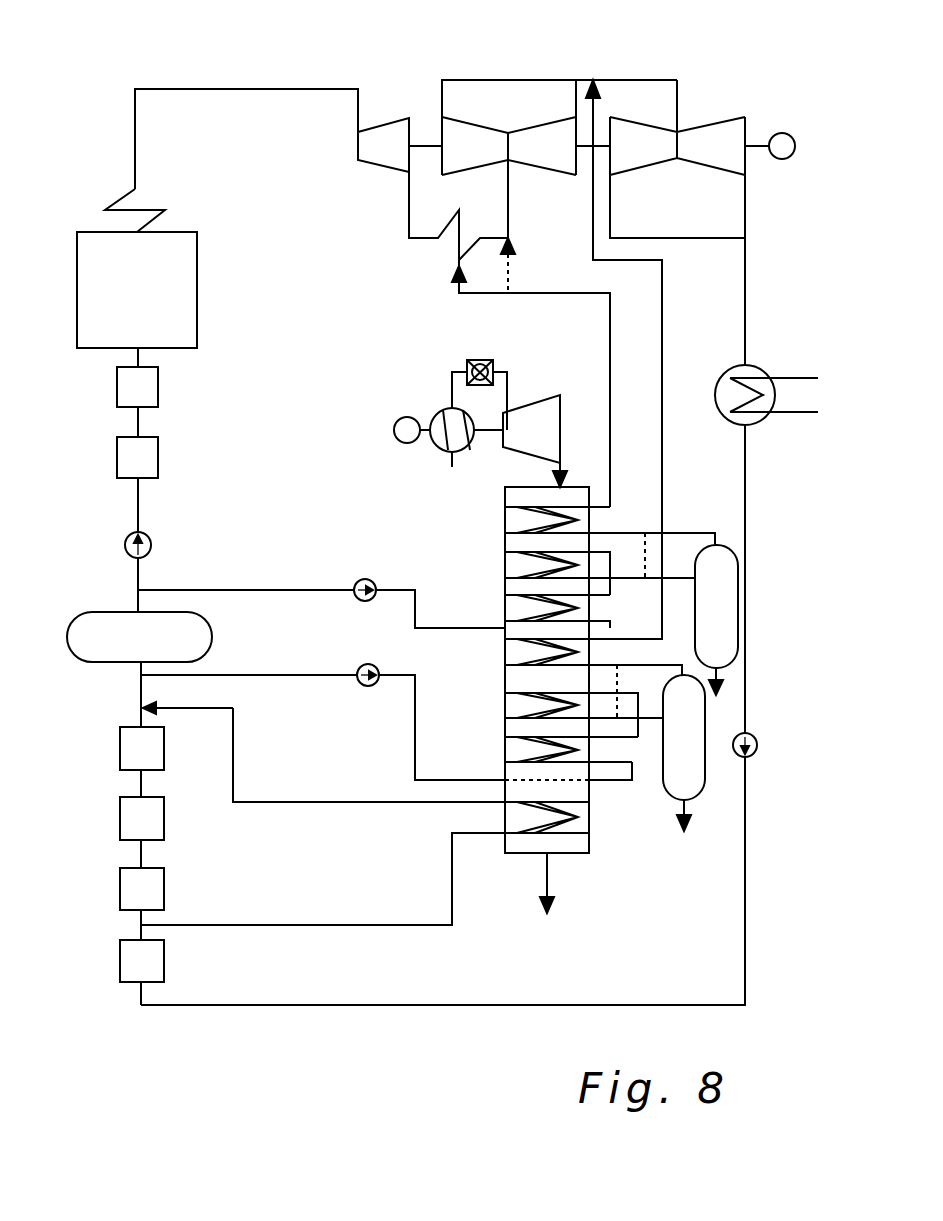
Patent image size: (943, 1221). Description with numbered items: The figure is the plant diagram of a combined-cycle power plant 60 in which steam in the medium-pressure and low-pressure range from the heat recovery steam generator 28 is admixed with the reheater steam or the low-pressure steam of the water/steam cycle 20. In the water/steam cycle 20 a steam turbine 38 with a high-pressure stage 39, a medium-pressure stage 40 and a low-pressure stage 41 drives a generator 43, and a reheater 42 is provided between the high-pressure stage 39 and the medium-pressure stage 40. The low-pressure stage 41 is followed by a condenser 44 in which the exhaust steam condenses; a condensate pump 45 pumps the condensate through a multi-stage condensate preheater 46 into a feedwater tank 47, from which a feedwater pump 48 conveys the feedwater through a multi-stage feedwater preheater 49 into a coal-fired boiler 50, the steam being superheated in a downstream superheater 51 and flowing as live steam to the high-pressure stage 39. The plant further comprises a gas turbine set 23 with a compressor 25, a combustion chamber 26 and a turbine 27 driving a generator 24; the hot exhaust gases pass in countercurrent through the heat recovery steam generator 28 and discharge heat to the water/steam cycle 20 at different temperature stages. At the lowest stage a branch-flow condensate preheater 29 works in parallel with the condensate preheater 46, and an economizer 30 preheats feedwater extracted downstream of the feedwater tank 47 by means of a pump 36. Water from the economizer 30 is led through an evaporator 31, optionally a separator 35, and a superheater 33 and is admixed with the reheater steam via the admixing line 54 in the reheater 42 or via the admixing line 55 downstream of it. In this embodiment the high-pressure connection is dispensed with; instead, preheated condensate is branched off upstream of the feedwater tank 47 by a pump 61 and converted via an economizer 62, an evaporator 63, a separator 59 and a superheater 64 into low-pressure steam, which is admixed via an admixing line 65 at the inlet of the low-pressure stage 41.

The water/steam cycle 20 is at (748, 945).
The gas turbine set 23 is at (368, 457).
The generator 24 is at (395, 424).
The compressor 25 is at (445, 446).
The combustion chamber 26 is at (500, 336).
The turbine 27 is at (553, 435).
The heat recovery steam generator 28 is at (522, 858).
The branch-flow condensate preheater 29 is at (585, 833).
The economizer 30 is at (505, 627).
The evaporator 31 is at (505, 578).
The superheater 33 is at (505, 535).
The separator 35 is at (725, 600).
The pump 36 is at (355, 580).
The steam turbine 38 is at (765, 99).
The high-pressure stage 39 is at (390, 132).
The medium-pressure stage 40 is at (485, 135).
The low-pressure stage 41 is at (705, 138).
The reheater 42 is at (455, 245).
The generator 43 is at (785, 150).
The condenser 44 is at (752, 418).
The condensate pump 45 is at (758, 745).
The multi-stage condensate preheater 46 is at (85, 847).
The feedwater tank 47 is at (105, 657).
The feedwater pump 48 is at (125, 550).
The multi-stage feedwater preheater 49 is at (90, 427).
The boiler 50 is at (166, 316).
The superheater 51 is at (100, 210).
The admixing line 54 is at (483, 295).
The admixing line 55 is at (513, 272).
The separator 59 is at (693, 733).
The combined-cycle power plant 60 is at (360, 350).
The pump 61 is at (345, 700).
The economizer 62 is at (505, 758).
The evaporator 63 is at (505, 720).
The superheater 64 is at (505, 675).
The admixing line 65 is at (662, 313).